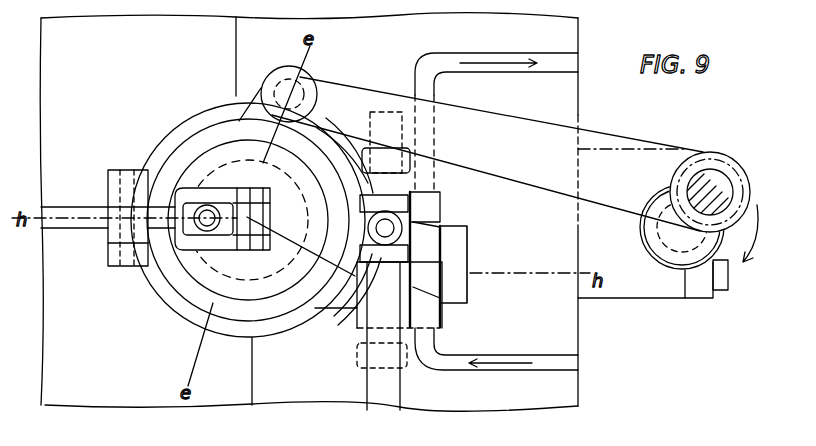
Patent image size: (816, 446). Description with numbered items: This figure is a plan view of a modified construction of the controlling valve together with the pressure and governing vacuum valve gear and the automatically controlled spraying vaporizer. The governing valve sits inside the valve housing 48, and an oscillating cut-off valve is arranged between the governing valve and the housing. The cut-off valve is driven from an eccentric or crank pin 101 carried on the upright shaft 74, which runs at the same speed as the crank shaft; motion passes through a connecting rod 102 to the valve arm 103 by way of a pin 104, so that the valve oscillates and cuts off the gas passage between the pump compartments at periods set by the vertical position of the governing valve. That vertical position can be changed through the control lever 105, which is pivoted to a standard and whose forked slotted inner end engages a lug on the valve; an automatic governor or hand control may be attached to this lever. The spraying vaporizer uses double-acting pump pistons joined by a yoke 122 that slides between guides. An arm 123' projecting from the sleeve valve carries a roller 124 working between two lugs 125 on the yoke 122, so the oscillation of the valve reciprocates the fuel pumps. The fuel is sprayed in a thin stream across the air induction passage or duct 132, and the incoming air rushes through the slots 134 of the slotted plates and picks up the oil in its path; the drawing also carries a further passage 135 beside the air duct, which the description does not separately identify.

The valve housing 48 is at (173, 305).
The upright shaft 74 is at (679, 240).
The eccentric or crank pin 101 is at (713, 180).
The connecting rod 102 is at (591, 140).
The valve arm 103 is at (250, 104).
The pin 104 is at (298, 85).
The control lever 105 is at (55, 210).
The yoke 122 is at (386, 383).
The arm 123' is at (278, 244).
The roller 124 is at (402, 222).
The lugs 125 is at (388, 200).
The air induction passage or duct 132 is at (455, 285).
The slots 134 is at (457, 361).
The supply pipe 135 is at (553, 66).